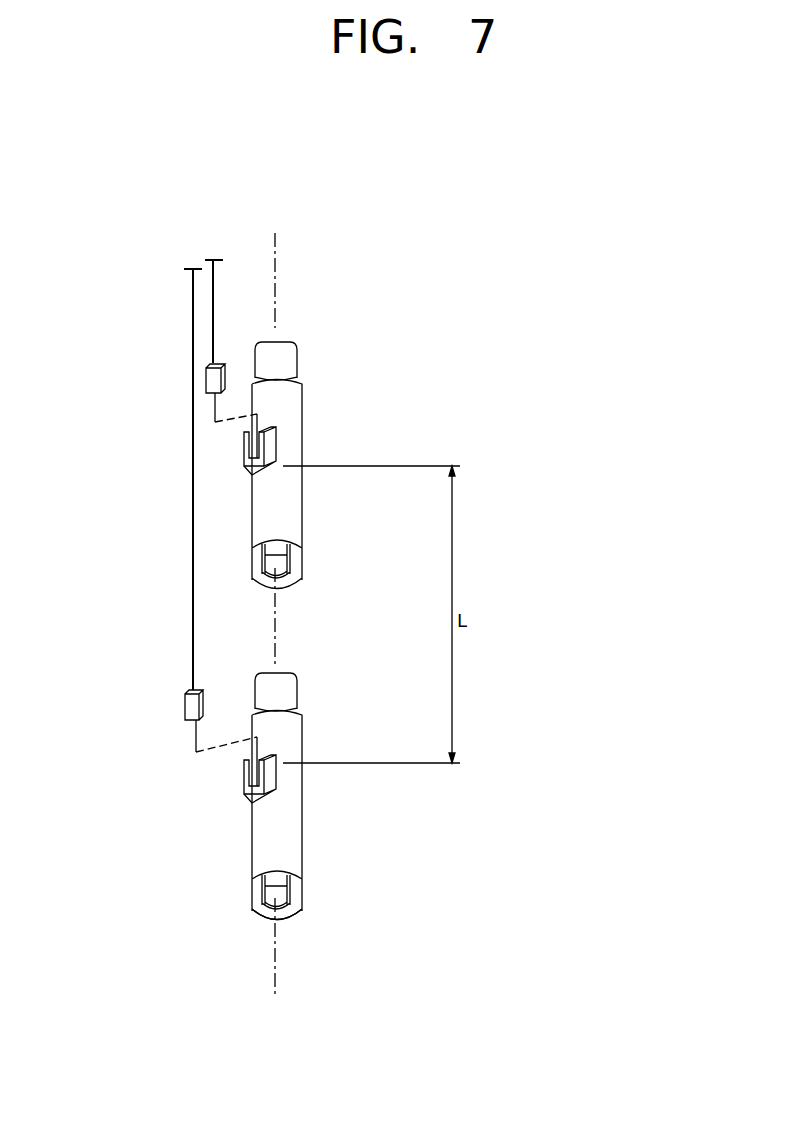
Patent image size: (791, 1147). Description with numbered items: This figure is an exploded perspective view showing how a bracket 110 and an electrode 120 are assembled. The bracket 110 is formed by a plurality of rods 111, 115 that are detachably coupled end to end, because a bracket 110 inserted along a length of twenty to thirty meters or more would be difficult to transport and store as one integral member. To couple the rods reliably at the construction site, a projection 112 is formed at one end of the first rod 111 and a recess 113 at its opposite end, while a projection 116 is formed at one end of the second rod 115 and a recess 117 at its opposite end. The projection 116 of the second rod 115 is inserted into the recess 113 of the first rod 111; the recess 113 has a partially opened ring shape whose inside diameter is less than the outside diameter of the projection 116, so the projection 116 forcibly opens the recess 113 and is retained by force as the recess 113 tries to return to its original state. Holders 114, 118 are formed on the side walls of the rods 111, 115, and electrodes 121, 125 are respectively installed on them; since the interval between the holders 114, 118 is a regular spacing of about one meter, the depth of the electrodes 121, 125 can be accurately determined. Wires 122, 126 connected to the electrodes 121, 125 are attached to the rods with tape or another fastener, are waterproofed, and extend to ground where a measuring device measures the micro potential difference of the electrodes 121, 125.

The bracket 110 is at (320, 493).
The first rod 111 is at (290, 409).
The projection 112 is at (290, 362).
The recess 113 is at (288, 593).
The holder 114 is at (268, 449).
The second rod 115 is at (290, 739).
The projection 116 is at (290, 693).
The recess 117 is at (288, 923).
The holder 118 is at (268, 781).
The electrode 120 is at (184, 361).
The electrode 121 is at (208, 377).
The wire 122 is at (212, 305).
The electrode 125 is at (185, 702).
The wire 126 is at (193, 510).